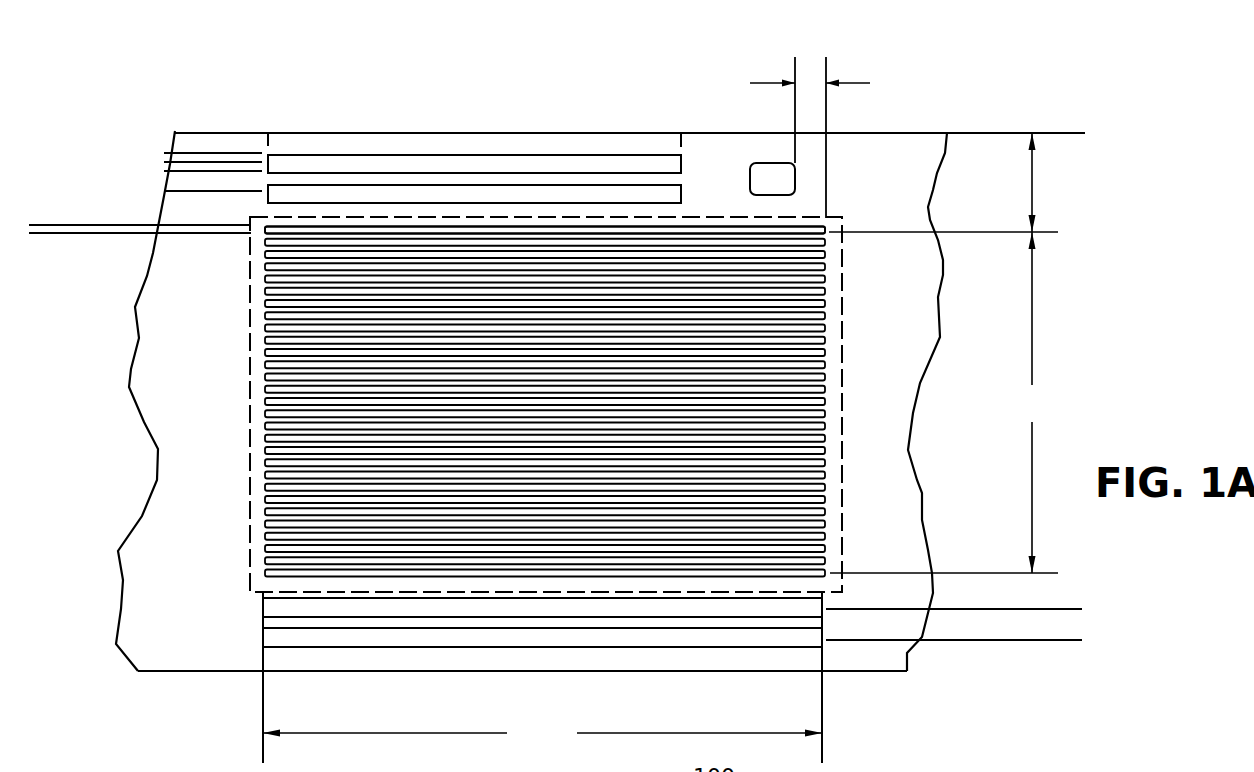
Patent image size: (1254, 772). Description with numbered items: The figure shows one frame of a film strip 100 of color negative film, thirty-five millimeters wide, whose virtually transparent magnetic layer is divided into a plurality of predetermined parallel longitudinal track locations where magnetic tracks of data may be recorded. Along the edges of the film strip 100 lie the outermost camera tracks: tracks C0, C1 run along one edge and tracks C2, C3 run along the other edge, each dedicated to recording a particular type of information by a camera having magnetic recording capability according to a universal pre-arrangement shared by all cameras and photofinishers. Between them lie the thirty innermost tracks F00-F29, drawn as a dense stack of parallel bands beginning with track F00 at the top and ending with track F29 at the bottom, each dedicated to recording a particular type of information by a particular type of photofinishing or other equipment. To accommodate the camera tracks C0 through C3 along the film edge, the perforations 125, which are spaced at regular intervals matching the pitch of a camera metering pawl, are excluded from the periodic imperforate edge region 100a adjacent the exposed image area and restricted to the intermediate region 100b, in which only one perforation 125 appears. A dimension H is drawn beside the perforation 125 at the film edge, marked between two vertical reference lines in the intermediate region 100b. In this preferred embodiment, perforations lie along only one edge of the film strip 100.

The film strip 100 is at (950, 133).
The imperforate edge region 100a is at (542, 733).
The intermediate region 100b is at (703, 152).
The perforation 125 is at (760, 163).
The gap spacing H is at (820, 83).
The track C0 is at (542, 608).
The track C1 is at (542, 638).
The track C2 is at (474, 194).
The track C3 is at (474, 164).
The track F00 is at (830, 221).
The track F29 is at (824, 572).
The innermost tracks F00-F29 is at (663, 353).